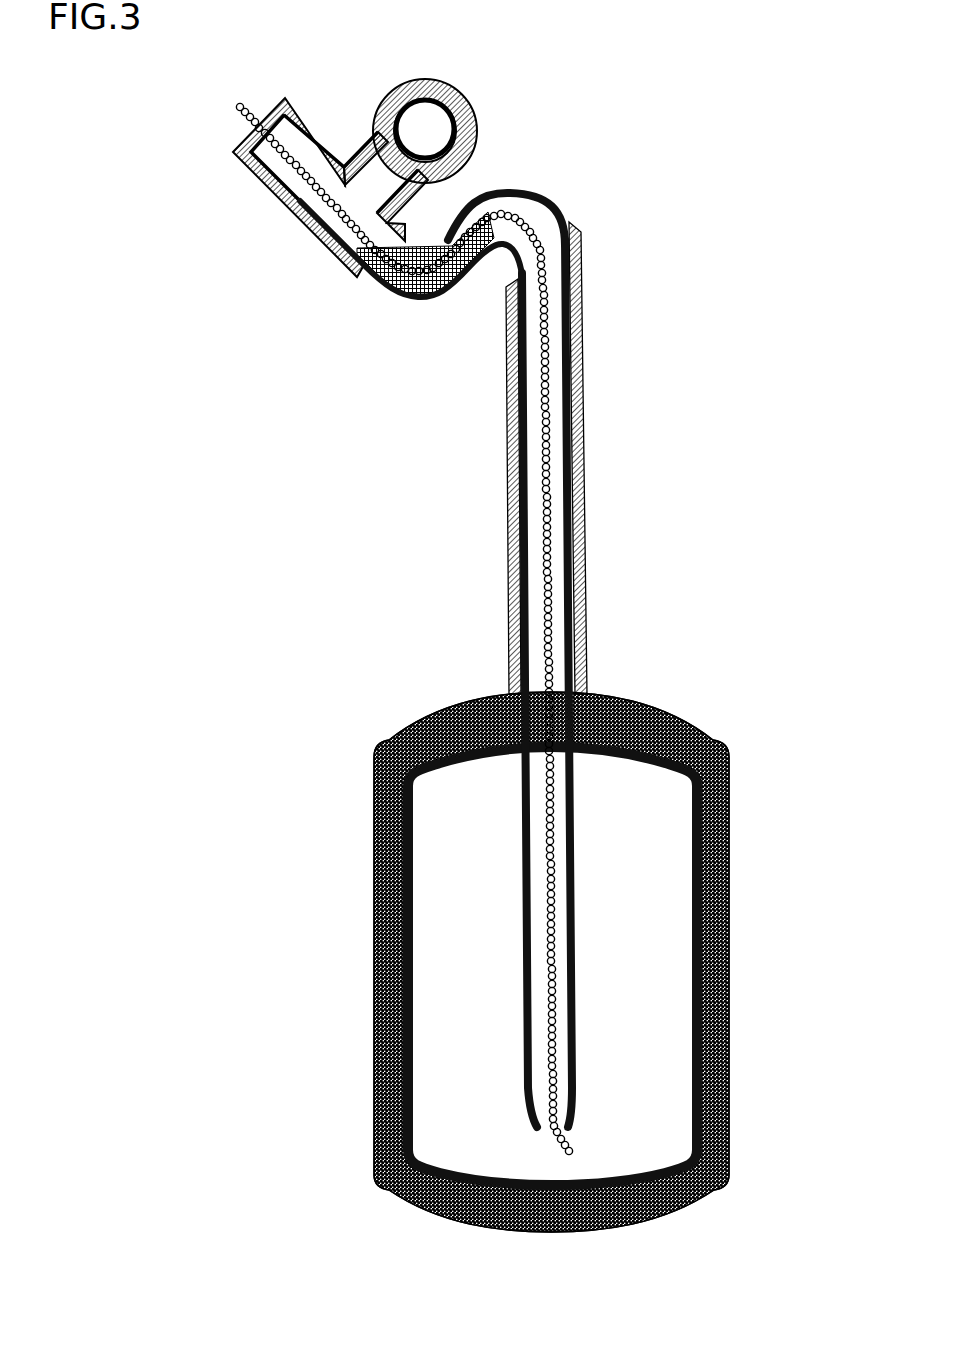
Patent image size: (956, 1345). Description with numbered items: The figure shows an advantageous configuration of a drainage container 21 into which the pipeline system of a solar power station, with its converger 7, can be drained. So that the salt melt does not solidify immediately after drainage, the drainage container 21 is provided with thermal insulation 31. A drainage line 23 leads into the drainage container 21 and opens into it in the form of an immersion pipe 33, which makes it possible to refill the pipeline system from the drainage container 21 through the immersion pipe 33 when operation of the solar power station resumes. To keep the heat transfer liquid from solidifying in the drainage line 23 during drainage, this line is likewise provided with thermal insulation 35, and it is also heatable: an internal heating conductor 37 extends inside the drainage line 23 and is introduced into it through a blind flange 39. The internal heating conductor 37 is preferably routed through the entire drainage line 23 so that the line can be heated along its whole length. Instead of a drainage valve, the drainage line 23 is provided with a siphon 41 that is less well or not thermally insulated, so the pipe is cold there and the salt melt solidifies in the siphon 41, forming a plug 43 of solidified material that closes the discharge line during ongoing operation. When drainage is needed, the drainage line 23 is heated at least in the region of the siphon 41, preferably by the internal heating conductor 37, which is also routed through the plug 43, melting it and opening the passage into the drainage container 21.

The converger 7 is at (470, 115).
The blind flange 39 is at (243, 167).
The plug 43 is at (382, 285).
The siphon 41 is at (418, 311).
The drainage line 23 is at (563, 660).
The thermal insulation 35 is at (583, 445).
The internal heating conductor 37 is at (508, 488).
The immersion pipe 33 is at (524, 923).
The thermal insulation 31 is at (728, 797).
The drainage container 21 is at (613, 962).